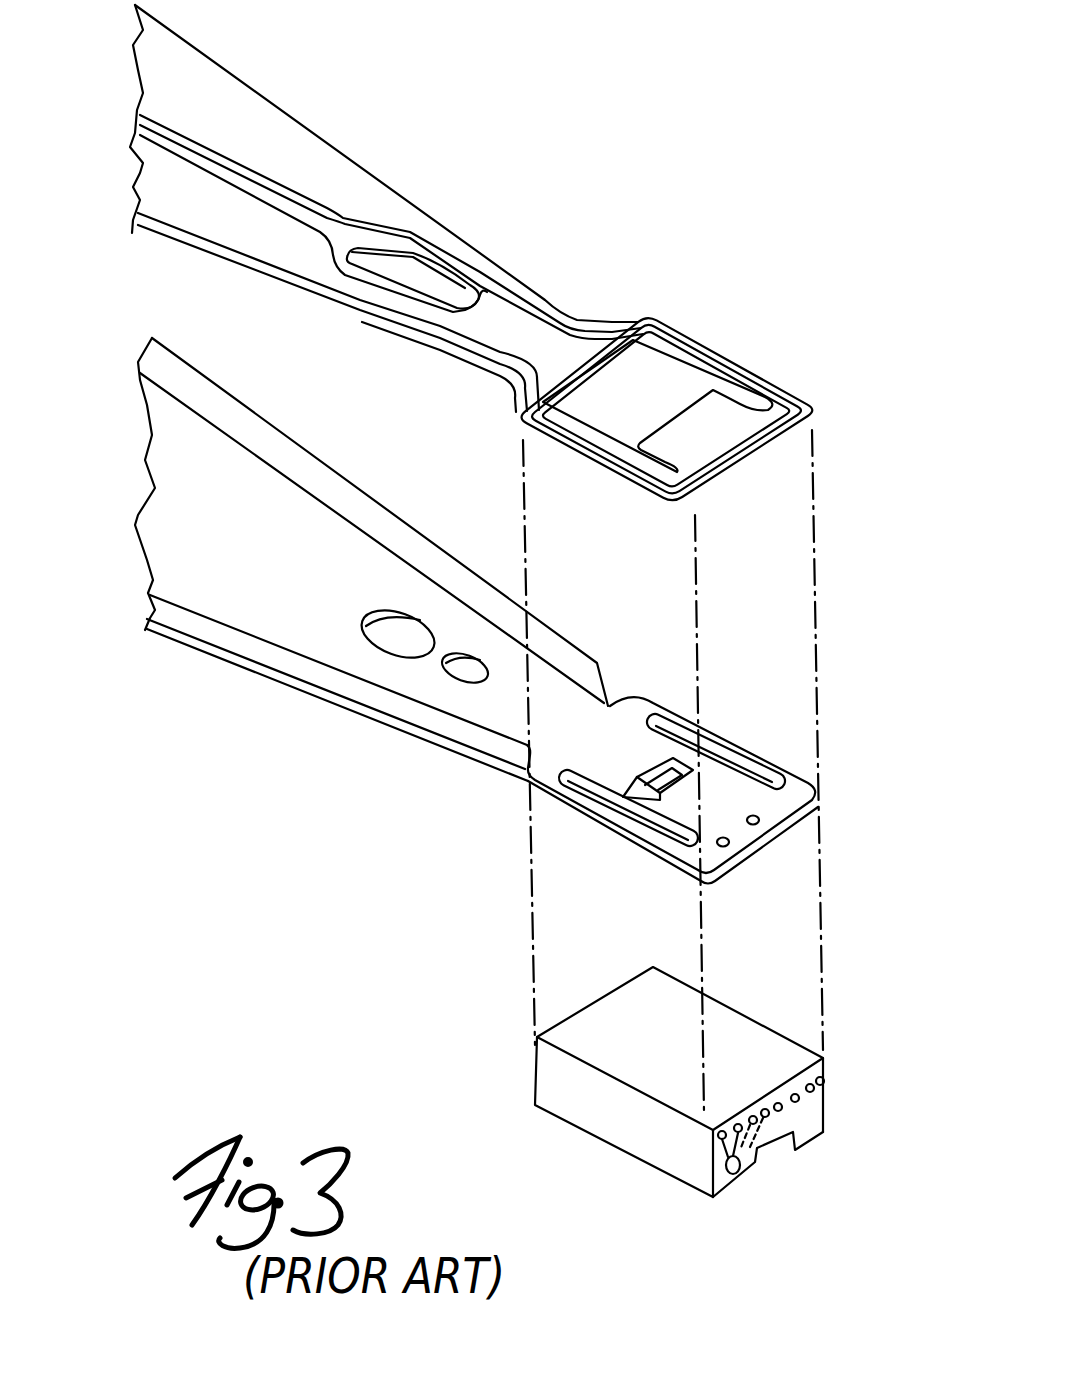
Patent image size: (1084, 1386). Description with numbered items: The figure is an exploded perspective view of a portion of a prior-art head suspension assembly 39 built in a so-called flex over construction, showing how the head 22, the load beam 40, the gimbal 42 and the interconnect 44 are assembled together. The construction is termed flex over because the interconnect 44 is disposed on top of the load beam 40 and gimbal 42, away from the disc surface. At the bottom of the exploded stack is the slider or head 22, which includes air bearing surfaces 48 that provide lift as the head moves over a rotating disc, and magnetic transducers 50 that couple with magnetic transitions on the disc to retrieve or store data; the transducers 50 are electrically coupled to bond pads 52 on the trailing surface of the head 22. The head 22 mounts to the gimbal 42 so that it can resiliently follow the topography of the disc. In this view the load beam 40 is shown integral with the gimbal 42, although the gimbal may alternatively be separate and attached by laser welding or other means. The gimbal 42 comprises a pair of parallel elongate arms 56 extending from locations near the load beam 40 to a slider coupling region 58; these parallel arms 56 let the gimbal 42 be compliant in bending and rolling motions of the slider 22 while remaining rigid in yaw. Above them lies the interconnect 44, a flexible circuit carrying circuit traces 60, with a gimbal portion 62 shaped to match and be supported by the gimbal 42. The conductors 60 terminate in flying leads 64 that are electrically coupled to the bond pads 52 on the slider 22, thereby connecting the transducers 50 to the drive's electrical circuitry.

The head 22 is at (703, 1123).
The head suspension assembly 39 is at (499, 303).
The load beam 40 is at (468, 627).
The gimbal 42 is at (484, 756).
The interconnect 44 is at (386, 208).
The air bearing surfaces 48 is at (817, 1140).
The magnetic transducers 50 is at (735, 1174).
The bond pads 52 is at (808, 1092).
The parallel elongate arms 56 is at (707, 730).
The slider coupling region 58 is at (745, 857).
The circuit traces 60 is at (240, 167).
The gimbal portion 62 is at (667, 424).
The flying leads 64 is at (760, 432).